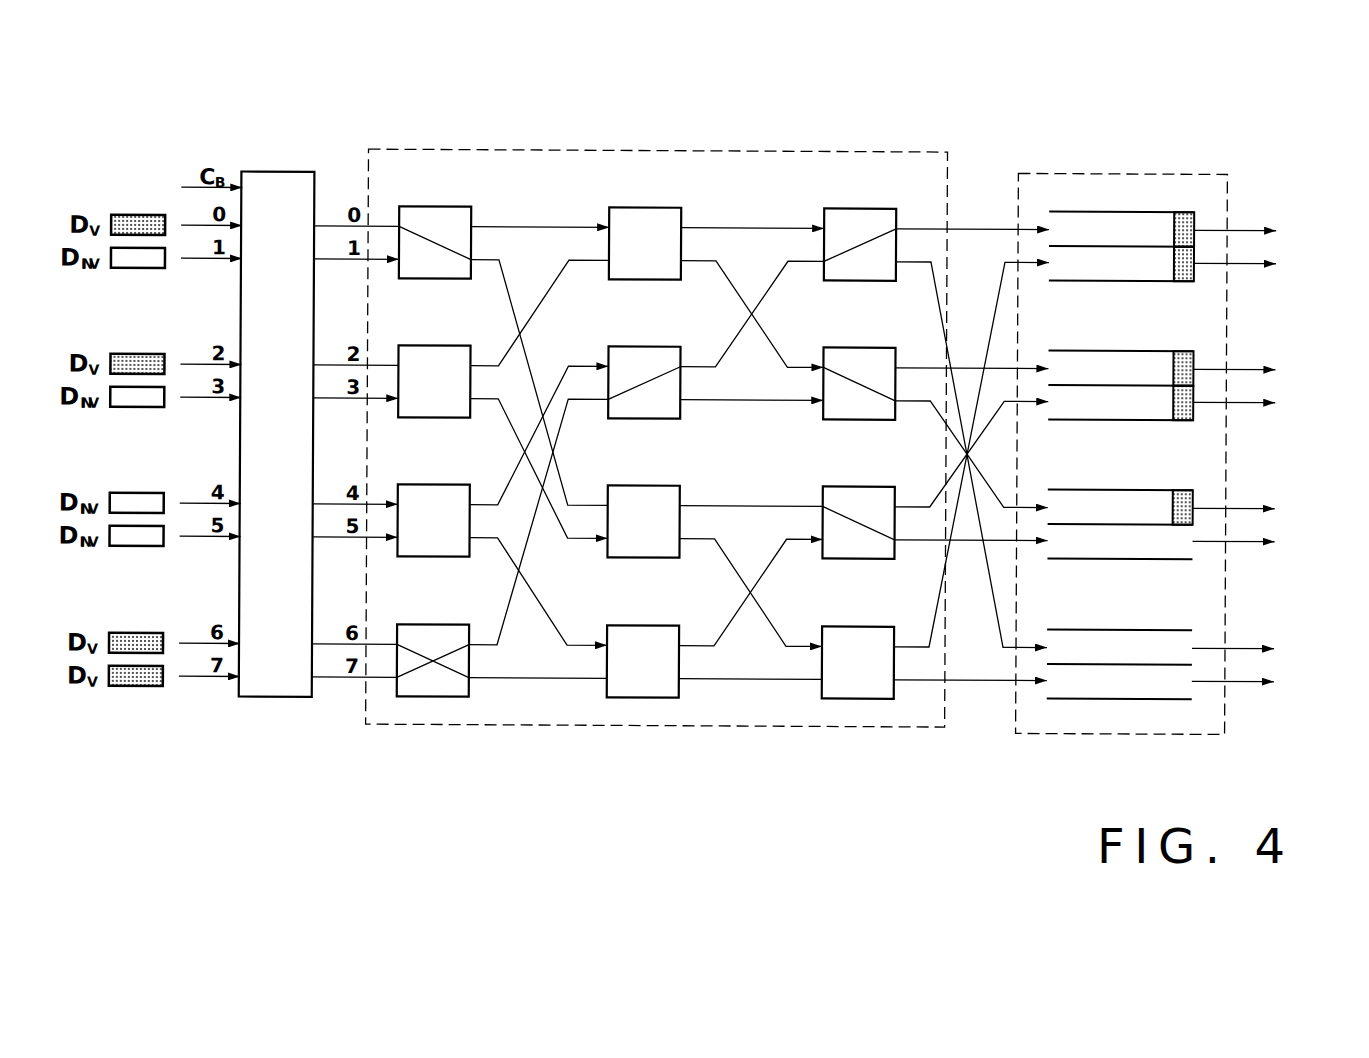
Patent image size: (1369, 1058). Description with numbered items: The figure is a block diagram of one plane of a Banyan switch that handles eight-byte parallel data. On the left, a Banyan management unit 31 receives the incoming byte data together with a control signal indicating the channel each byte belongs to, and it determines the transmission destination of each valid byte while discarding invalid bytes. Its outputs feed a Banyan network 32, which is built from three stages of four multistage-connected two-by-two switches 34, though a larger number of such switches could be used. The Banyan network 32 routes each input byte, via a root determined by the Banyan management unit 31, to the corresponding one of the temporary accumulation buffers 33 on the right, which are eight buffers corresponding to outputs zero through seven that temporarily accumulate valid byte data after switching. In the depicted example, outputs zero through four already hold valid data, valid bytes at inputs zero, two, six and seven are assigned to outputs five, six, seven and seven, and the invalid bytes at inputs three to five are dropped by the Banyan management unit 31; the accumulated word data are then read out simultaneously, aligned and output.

The Banyan management unit 31 is at (293, 172).
The Banyan network 32 is at (660, 150).
The temporary accumulation buffers 33 is at (1140, 147).
The 2×2 switch 34 is at (457, 206).